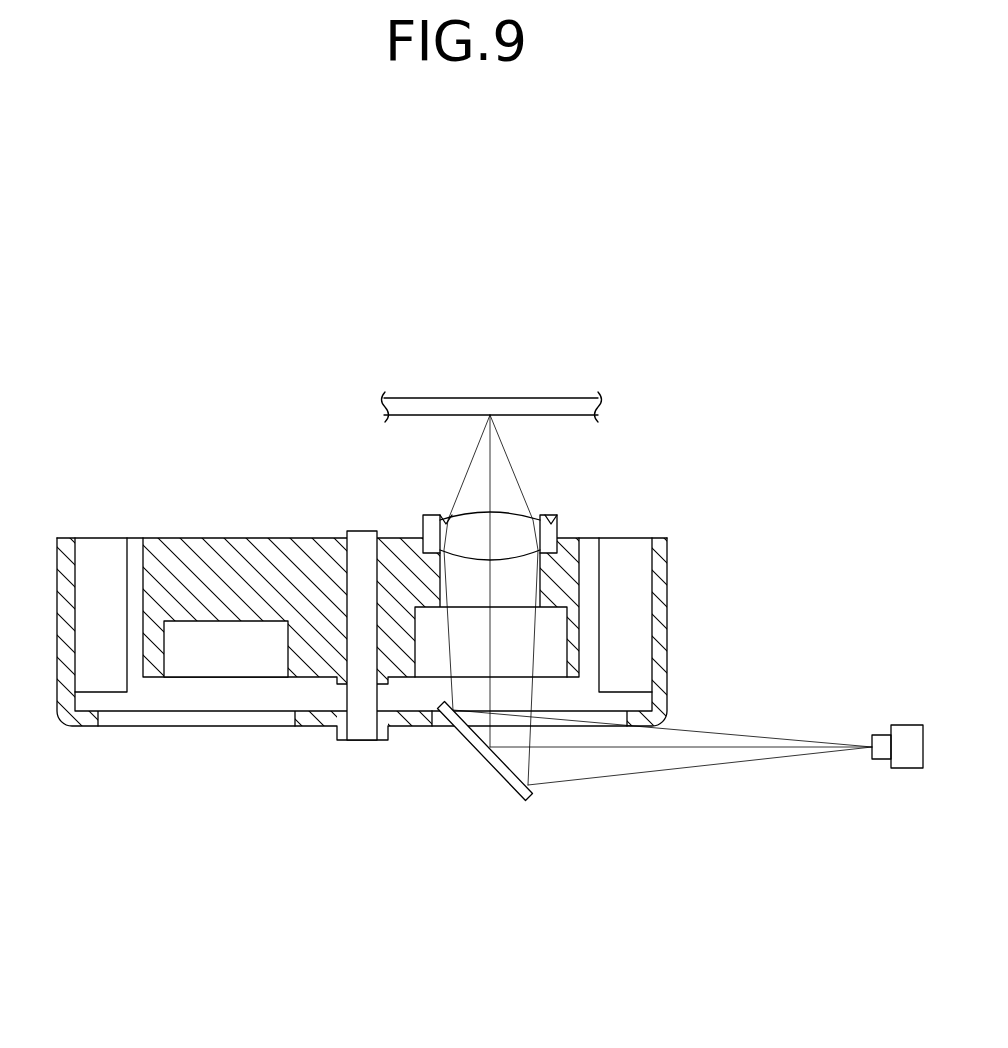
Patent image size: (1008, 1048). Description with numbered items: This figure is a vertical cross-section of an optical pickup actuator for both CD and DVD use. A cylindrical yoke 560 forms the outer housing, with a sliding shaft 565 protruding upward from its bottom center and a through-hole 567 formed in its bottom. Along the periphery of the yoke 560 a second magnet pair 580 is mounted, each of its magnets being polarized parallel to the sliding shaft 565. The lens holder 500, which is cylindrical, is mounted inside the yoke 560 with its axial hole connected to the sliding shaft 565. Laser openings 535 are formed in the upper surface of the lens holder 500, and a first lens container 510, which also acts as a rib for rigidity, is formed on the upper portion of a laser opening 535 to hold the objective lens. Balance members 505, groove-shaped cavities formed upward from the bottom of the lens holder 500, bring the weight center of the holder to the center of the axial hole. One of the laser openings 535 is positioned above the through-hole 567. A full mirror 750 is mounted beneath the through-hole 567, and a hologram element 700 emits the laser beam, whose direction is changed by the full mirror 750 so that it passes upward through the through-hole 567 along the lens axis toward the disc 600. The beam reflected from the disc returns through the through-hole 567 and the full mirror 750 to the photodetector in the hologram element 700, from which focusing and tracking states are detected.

The lens holder 500 is at (193, 548).
The balance members 505 is at (425, 653).
The first lens container 510 is at (557, 537).
The laser openings 535 is at (518, 582).
The cylindrical yoke 560 is at (668, 645).
The sliding shaft 565 is at (360, 533).
The through-hole 567 is at (435, 722).
The second magnet pair 580 is at (100, 565).
The object plate 600 is at (438, 405).
The hologram element 700 is at (908, 760).
The full mirror 750 is at (485, 757).